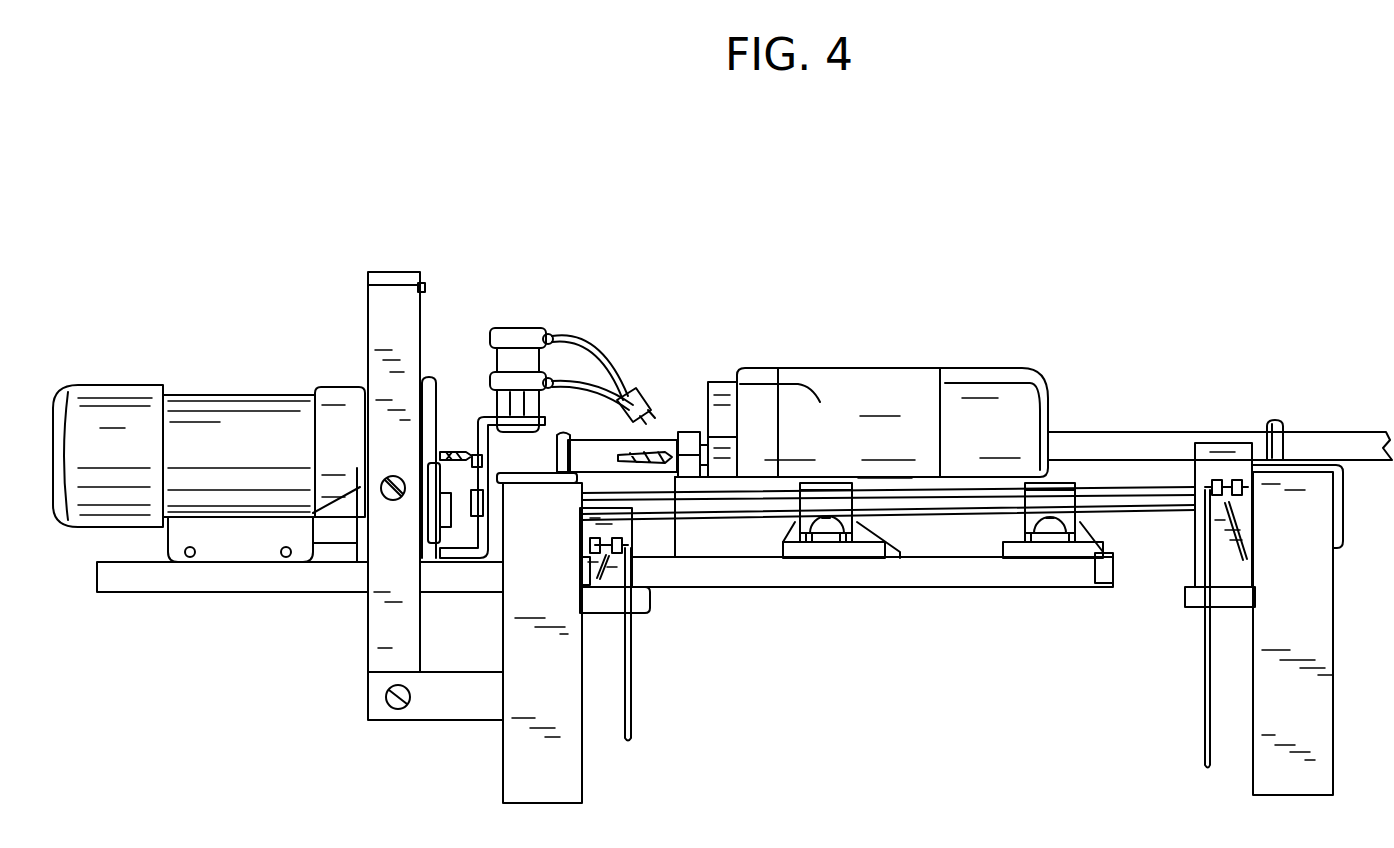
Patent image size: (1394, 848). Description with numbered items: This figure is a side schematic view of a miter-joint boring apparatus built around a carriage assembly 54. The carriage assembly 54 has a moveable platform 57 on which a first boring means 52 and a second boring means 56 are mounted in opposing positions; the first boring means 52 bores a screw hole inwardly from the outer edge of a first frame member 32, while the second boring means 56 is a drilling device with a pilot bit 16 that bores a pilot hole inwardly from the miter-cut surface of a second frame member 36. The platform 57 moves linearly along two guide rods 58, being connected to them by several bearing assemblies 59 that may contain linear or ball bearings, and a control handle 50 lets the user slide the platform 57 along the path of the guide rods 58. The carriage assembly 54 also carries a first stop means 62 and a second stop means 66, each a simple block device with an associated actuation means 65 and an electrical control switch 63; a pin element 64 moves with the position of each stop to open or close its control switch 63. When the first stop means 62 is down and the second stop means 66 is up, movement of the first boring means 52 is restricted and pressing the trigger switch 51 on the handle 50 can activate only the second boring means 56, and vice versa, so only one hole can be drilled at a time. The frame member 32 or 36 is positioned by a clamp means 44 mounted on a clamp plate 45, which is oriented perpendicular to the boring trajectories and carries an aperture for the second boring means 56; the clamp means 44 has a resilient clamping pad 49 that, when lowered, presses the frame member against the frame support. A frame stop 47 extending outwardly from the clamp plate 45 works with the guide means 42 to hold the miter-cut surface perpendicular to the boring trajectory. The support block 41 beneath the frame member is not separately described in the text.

The bit 16 is at (451, 450).
The first frame member 32 is at (1197, 430).
The second frame member 36 is at (1220, 368).
The support block 41 is at (1307, 465).
The guide means 42 is at (1263, 425).
The clamp means 44 is at (511, 328).
The clamp plate 45 is at (476, 418).
The frame stop 47 is at (498, 455).
The resilient clamping pad 49 is at (553, 432).
The control handle 50 is at (372, 298).
The trigger switch 51 is at (423, 292).
The first boring means 52 is at (883, 380).
The carriage assembly 54 is at (987, 625).
The second boring means 56 is at (136, 385).
The moveable platform 57 is at (216, 582).
The guide rods 58 is at (931, 498).
The bearing assemblies 59 is at (817, 510).
The first stop means 62 is at (645, 570).
The electrical control switch 63 is at (584, 568).
The pin element 64 is at (1235, 520).
The actuation means 65 is at (632, 714).
The second stop means 66 is at (1195, 557).